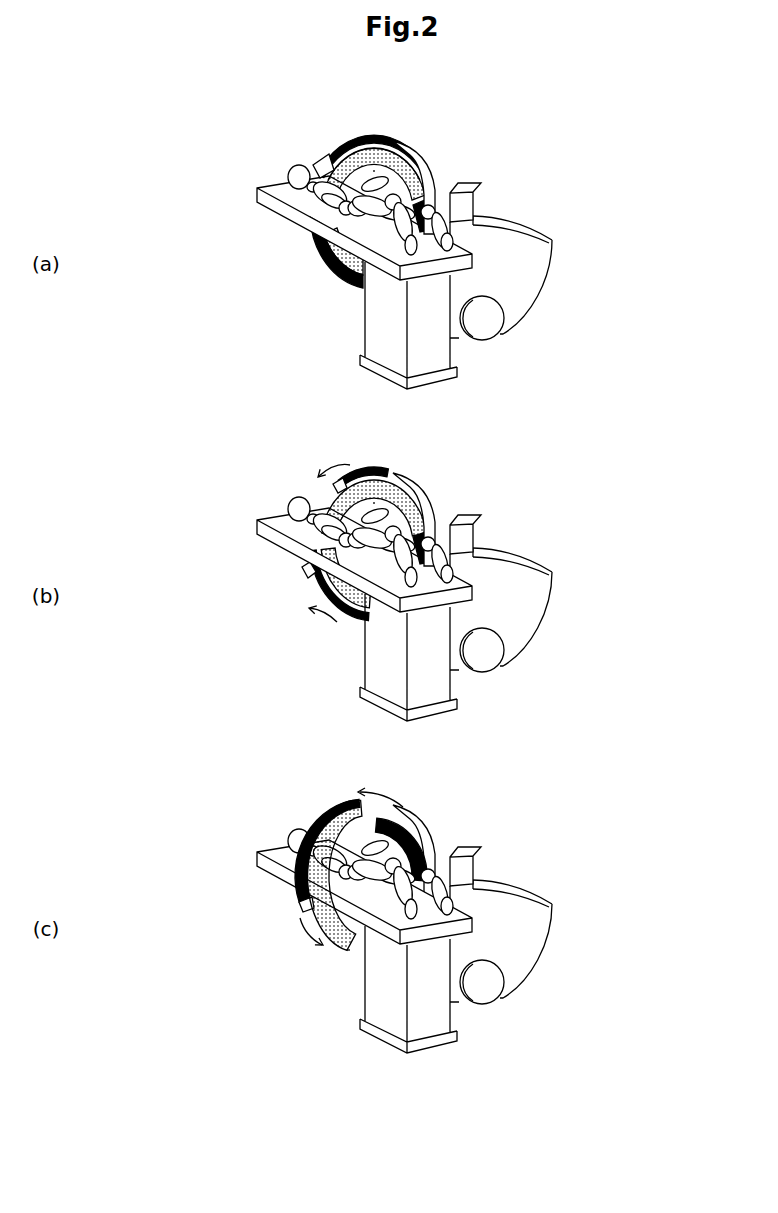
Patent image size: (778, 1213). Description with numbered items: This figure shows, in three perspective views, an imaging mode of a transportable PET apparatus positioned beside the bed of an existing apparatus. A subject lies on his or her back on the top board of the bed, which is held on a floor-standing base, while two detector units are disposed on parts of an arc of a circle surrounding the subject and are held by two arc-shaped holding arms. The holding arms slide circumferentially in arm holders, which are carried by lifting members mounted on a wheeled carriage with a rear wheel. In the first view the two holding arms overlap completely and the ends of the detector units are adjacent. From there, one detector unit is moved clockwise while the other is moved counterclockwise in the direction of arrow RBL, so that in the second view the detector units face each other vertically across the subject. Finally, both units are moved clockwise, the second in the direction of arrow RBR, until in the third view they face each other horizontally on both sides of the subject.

The arrow RB_L RBL is at (300, 638).
The arrow RB_R RBR is at (392, 792).